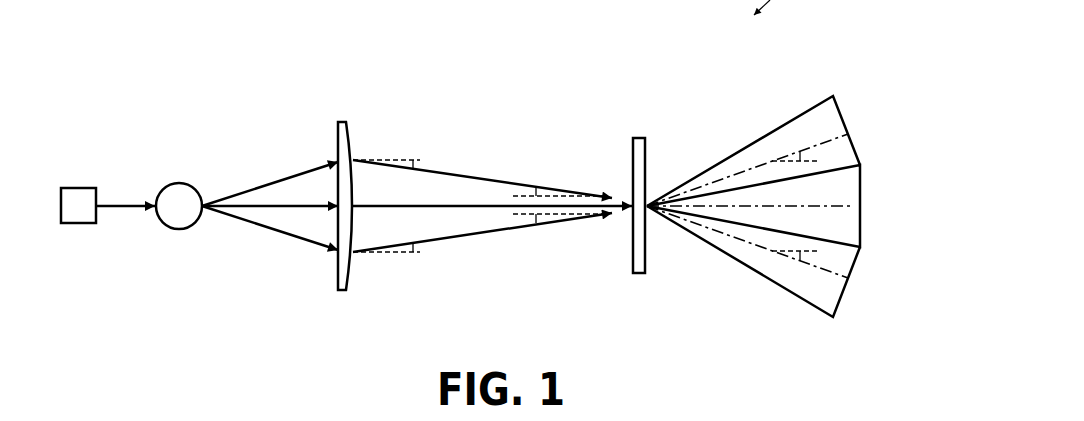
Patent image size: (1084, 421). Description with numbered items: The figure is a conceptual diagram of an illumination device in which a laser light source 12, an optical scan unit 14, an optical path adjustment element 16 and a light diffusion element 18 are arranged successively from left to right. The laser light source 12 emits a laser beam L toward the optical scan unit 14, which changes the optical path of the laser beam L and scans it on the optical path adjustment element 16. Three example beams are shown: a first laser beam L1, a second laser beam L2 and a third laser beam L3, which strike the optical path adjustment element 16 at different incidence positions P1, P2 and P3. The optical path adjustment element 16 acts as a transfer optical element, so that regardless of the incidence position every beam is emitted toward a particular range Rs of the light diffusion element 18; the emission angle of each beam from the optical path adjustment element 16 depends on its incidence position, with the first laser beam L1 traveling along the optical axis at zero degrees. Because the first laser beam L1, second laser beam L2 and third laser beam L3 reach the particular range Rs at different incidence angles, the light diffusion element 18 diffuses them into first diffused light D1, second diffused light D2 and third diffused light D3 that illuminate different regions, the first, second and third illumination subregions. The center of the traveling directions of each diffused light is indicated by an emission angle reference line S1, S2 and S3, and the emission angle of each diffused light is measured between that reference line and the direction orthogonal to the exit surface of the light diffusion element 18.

The laser light source 12 is at (80, 192).
The optical scan unit 14 is at (177, 187).
The optical path adjustment element 16 is at (338, 120).
The light diffusion element 18 is at (638, 140).
The laser beam L is at (119, 203).
The first laser beam L1 is at (264, 202).
The second laser beam L2 is at (278, 178).
The third laser beam L3 is at (277, 233).
The incidence position P1 is at (333, 207).
The incidence position P2 is at (335, 160).
The incidence position P3 is at (333, 252).
The particular range Rs is at (627, 211).
The emission angle reference line S1 is at (830, 205).
The emission angle reference line S2 is at (728, 238).
The emission angle reference line S3 is at (728, 175).
The first diffused light D1 is at (850, 227).
The second diffused light D2 is at (828, 297).
The third diffused light D3 is at (830, 118).